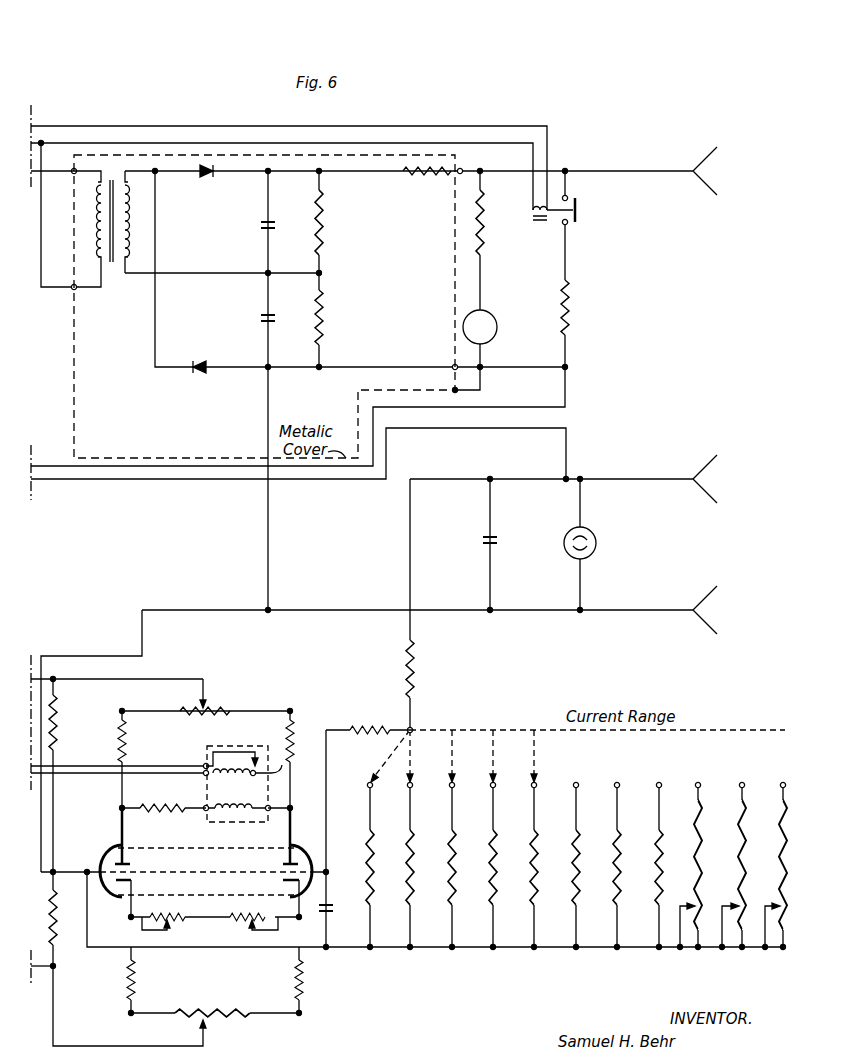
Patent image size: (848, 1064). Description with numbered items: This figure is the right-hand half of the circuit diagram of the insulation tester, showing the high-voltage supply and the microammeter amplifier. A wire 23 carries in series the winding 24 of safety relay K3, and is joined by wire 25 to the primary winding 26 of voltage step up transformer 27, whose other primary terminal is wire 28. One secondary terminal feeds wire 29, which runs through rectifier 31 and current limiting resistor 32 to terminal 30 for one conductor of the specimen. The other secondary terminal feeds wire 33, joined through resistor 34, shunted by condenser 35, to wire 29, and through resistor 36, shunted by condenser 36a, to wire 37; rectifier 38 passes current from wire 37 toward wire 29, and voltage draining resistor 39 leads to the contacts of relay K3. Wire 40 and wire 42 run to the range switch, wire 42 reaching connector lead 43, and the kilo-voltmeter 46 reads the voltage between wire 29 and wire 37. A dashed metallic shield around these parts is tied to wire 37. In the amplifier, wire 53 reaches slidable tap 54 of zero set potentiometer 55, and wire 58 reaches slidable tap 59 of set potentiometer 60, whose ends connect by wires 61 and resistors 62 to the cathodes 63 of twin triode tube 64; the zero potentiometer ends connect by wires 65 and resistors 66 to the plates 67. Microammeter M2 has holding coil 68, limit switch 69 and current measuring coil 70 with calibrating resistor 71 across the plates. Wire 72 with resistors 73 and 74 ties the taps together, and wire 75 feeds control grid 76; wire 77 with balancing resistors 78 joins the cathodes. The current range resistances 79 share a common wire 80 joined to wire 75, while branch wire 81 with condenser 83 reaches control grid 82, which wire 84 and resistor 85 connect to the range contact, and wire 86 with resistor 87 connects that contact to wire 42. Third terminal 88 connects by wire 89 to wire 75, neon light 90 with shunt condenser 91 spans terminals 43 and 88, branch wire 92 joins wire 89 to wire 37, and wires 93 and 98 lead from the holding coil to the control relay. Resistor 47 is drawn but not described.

The wire 23 is at (288, 126).
The winding of safety relay K3 24 is at (533, 213).
The wire 25 is at (90, 292).
The primary winding 26 is at (94, 238).
The voltage step up transformer 27 is at (112, 176).
The wire 28 is at (67, 180).
The wire 29 is at (145, 170).
The terminal 30 is at (651, 171).
The rectifier 31 is at (216, 169).
The current limiting resistor 32 is at (428, 176).
The wire 33 is at (190, 272).
The resistor 34 is at (323, 232).
The condenser 35 is at (261, 226).
The resistor 36 is at (325, 318).
The condenser 36a is at (261, 318).
The wire 37 is at (243, 380).
The rectifier 38 is at (200, 360).
The voltage draining resistor 39 is at (572, 309).
The wire 40 is at (499, 407).
The wire 42 is at (527, 428).
The connector lead 43 is at (653, 478).
The high voltage kilo-voltmeter 46 is at (462, 318).
The resistor 47 is at (484, 217).
The wire 53 is at (130, 678).
The slidable tap 54 is at (200, 701).
The zero set potentiometer 55 is at (212, 716).
The wire 58 is at (46, 980).
The slidable tap 59 is at (198, 1025).
The set potentiometer 60 is at (214, 1006).
The wires 61 is at (142, 1017).
The resistor 62 is at (128, 977).
The cathodes 63 is at (120, 885).
The twin triode tube 64 is at (232, 843).
The wires 65 is at (142, 711).
The resistor 66 is at (118, 736).
The plates 67 is at (183, 848).
The holding coil 68 is at (208, 779).
The limit switch 69 is at (246, 788).
The current measuring coil 70 is at (237, 780).
The calibrating resistor 71 is at (168, 812).
The wire 72 is at (56, 808).
The resistor 73 is at (58, 716).
The resistor 74 is at (58, 921).
The wire 75 is at (74, 871).
The control grid 76 is at (138, 876).
The wire 77 is at (217, 918).
The adjustable balancing resistors 78 is at (182, 918).
The current range resistances 79 is at (407, 830).
The common wire 80 is at (233, 948).
The branch wire 81 is at (320, 860).
The control grid 82 is at (274, 861).
The condenser 83 is at (332, 907).
The wire 84 is at (343, 728).
The resistor 85 is at (381, 728).
The wire 86 is at (412, 540).
The resistor 87 is at (422, 680).
The third terminal 88 is at (652, 610).
The wire 89 is at (244, 610).
The neon light 90 is at (566, 556).
The condenser 91 is at (478, 548).
The branch wire 92 is at (271, 549).
The wire 93 is at (113, 775).
The wire 98 is at (142, 765).
The microammeter M2 is at (238, 751).
The safety relay K3 is at (580, 225).